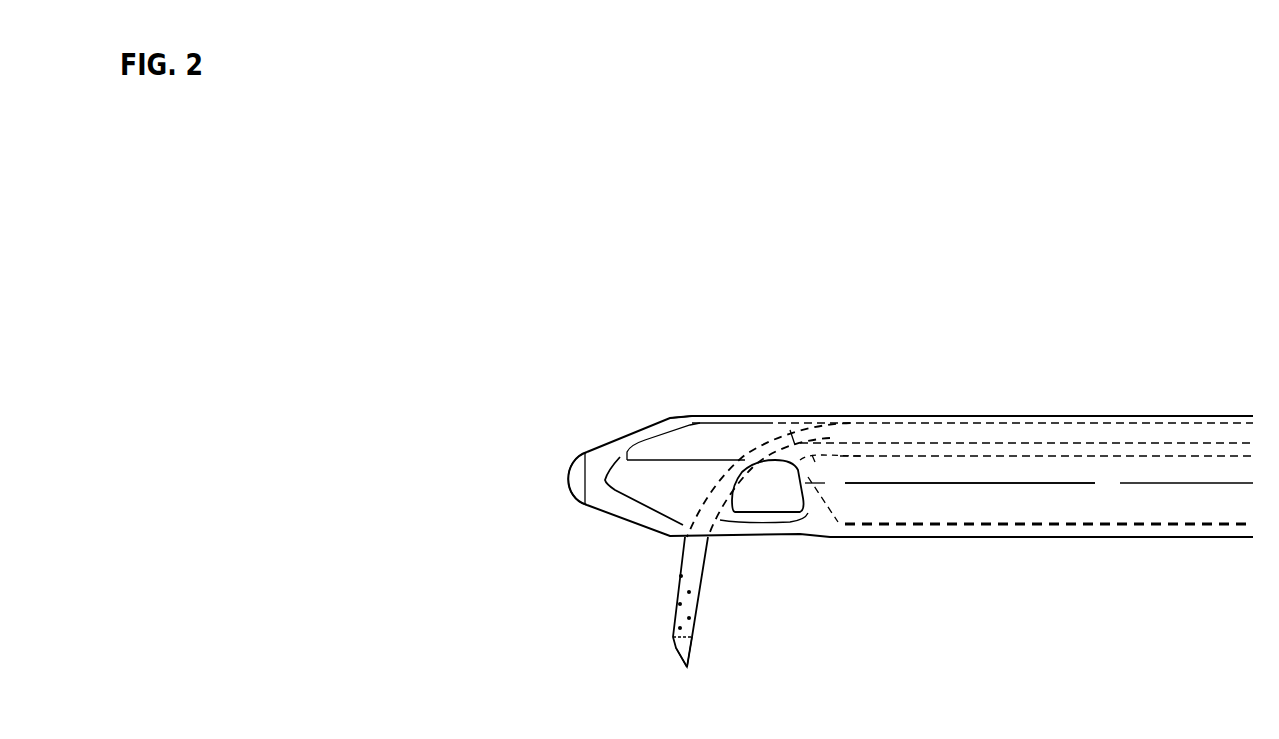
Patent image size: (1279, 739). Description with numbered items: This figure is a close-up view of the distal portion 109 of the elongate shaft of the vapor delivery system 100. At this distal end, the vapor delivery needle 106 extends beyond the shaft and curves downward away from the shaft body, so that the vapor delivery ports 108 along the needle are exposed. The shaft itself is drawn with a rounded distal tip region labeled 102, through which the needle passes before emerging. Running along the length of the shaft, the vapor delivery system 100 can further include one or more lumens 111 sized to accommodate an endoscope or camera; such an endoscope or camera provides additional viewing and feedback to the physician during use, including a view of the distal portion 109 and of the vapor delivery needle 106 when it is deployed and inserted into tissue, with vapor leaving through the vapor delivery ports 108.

The vapor delivery system 100 is at (1061, 243).
The housing 102 is at (668, 417).
The vapor delivery needle 106 is at (694, 603).
The vapor delivery ports 108 is at (673, 627).
The distal portion 109 is at (503, 350).
The lumens 111 is at (986, 510).